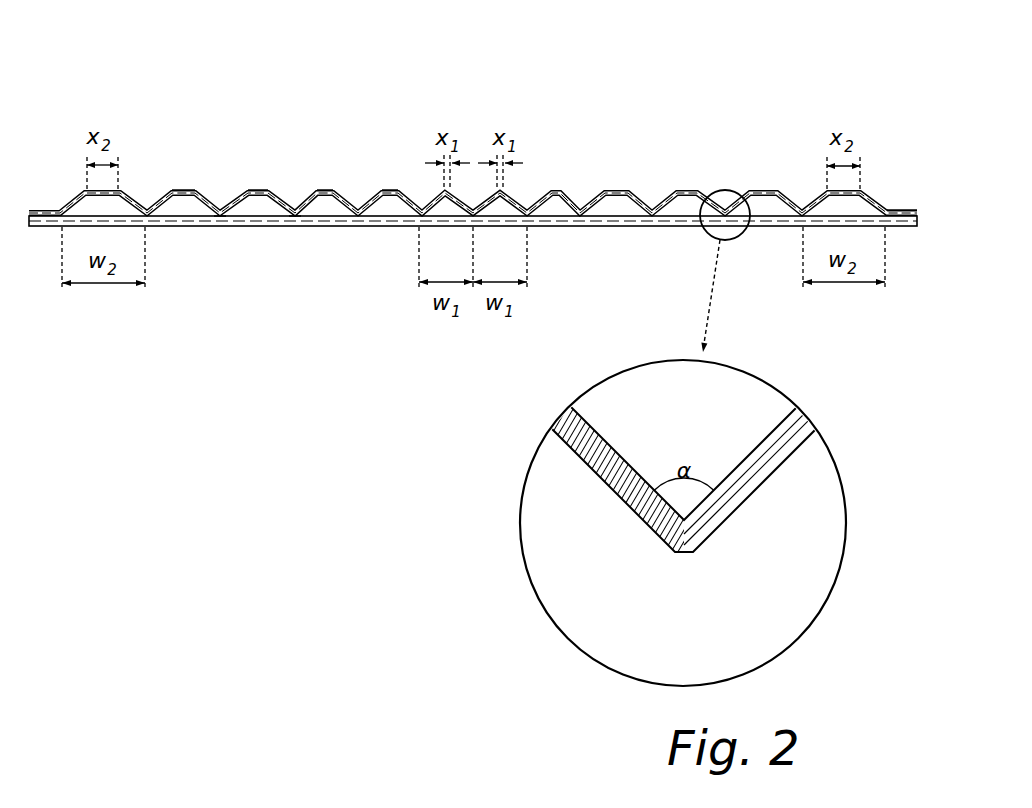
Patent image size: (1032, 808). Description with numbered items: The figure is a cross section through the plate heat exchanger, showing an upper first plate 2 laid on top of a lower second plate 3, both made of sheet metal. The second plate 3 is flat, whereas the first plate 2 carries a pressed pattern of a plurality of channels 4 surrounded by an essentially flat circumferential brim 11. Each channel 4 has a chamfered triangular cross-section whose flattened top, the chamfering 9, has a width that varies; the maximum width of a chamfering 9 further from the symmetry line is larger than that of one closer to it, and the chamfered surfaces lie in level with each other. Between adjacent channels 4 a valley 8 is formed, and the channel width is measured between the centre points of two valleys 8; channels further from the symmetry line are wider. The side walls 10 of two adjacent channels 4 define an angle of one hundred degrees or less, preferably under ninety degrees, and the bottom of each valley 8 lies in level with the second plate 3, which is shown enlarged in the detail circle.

The first plate 2 is at (903, 213).
The second plate 3 is at (897, 227).
The channel 4 is at (331, 191).
The valley 8 is at (220, 227).
The chamfering 9 is at (185, 190).
The side wall 10 is at (608, 492).
The circumferential brim 11 is at (897, 216).